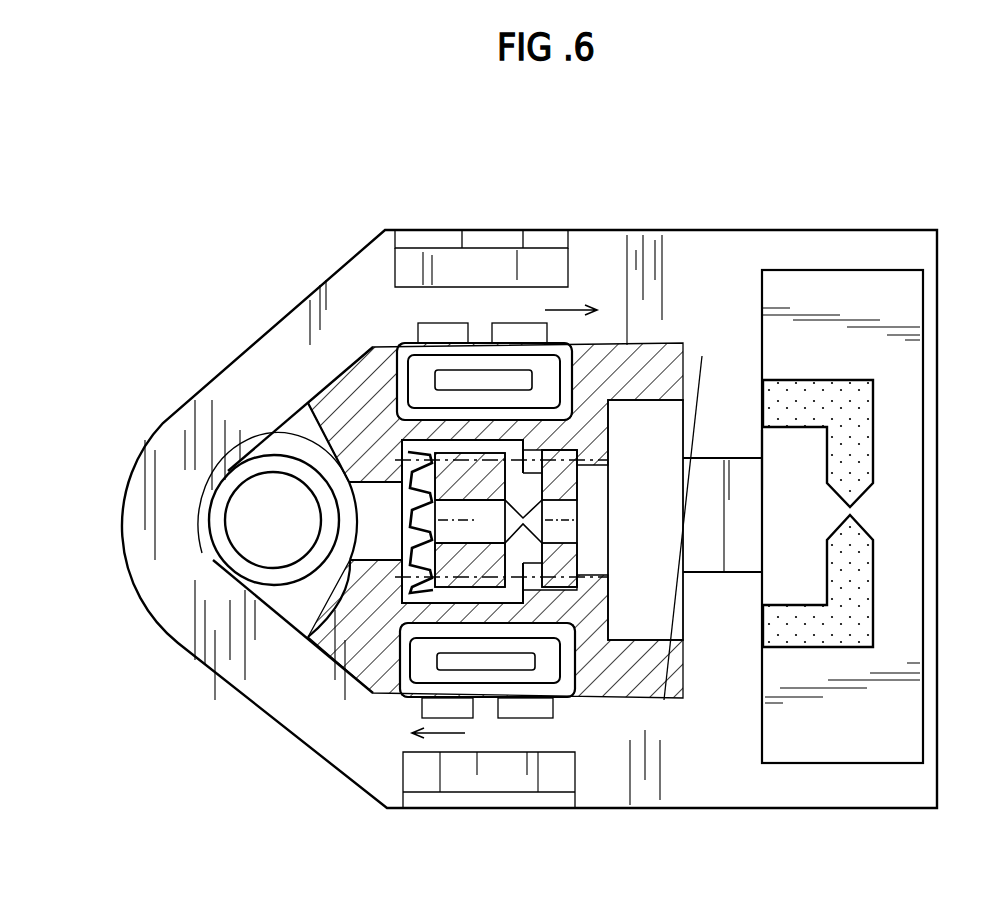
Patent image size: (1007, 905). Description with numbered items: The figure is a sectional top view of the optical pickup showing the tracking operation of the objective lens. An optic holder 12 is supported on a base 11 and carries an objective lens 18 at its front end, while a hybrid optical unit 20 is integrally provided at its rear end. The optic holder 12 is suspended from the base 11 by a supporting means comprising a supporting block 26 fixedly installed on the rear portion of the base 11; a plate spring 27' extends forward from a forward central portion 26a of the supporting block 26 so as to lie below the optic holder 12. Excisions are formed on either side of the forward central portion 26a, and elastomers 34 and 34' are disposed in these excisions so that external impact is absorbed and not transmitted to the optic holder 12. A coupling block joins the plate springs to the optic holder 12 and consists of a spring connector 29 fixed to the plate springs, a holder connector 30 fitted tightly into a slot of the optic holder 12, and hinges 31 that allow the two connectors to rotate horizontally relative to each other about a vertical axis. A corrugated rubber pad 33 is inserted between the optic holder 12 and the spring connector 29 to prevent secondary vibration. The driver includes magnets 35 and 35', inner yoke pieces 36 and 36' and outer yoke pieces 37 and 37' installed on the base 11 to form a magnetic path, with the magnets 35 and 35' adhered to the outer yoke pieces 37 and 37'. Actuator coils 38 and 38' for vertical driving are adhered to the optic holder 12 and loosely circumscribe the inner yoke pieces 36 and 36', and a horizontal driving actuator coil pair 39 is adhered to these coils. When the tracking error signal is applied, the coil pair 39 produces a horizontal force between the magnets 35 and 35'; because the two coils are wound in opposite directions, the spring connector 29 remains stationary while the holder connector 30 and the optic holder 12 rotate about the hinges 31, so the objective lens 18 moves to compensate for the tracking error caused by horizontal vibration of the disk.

The base 11 is at (717, 800).
The optic holder 12 is at (323, 390).
The objective lens 18 is at (242, 555).
The hybrid optical unit 20 is at (670, 508).
The supporting block 26 is at (922, 327).
The forward central portion 26a is at (770, 452).
The plate spring 27' is at (578, 547).
The spring connector 29 is at (478, 455).
The holder connector 30 is at (565, 552).
The hinges 31 is at (535, 494).
The corrugated rubber pad 33 is at (318, 643).
The elastomer 34 is at (875, 581).
The elastomer 34' is at (876, 443).
The magnet 35 is at (473, 801).
The magnet 35' is at (481, 232).
The inner yoke piece 36 is at (464, 692).
The inner yoke piece 36' is at (416, 348).
The outer yoke piece 37 is at (489, 821).
The outer yoke piece 37' is at (481, 212).
The actuator coil 38 is at (495, 657).
The actuator coil 38' is at (495, 359).
The actuator coil pair 39 is at (523, 328).